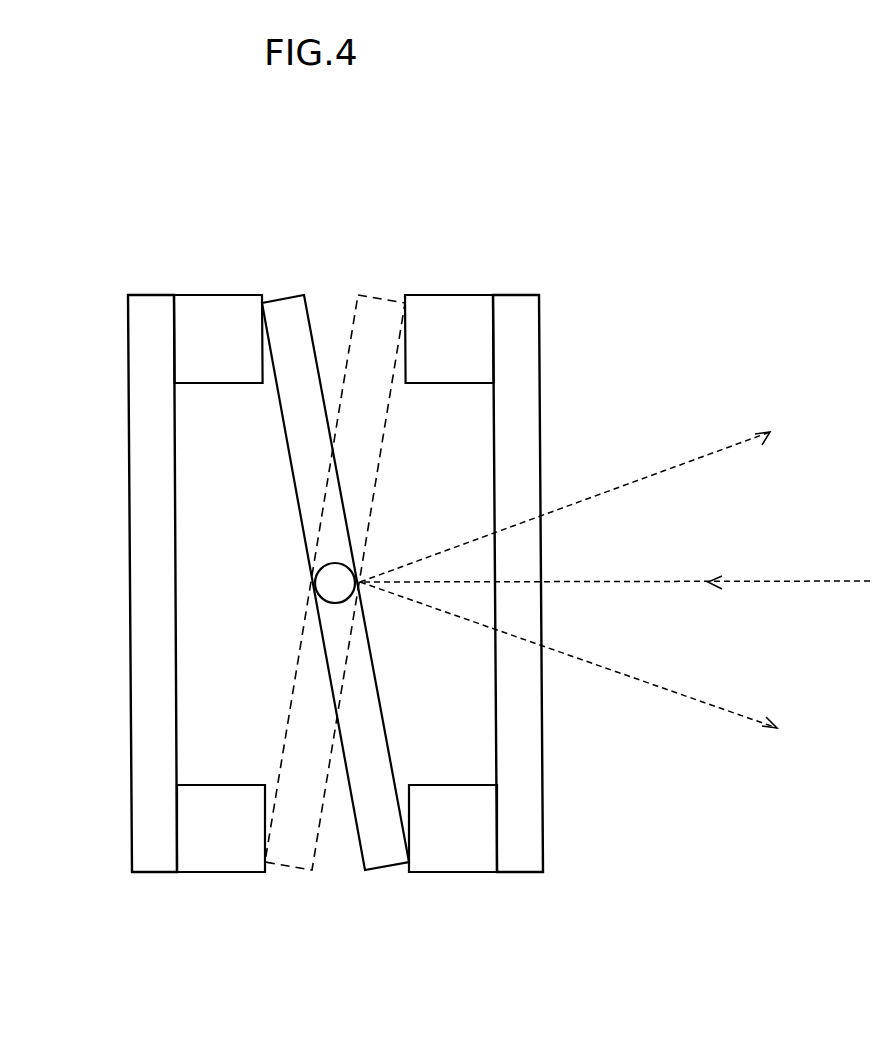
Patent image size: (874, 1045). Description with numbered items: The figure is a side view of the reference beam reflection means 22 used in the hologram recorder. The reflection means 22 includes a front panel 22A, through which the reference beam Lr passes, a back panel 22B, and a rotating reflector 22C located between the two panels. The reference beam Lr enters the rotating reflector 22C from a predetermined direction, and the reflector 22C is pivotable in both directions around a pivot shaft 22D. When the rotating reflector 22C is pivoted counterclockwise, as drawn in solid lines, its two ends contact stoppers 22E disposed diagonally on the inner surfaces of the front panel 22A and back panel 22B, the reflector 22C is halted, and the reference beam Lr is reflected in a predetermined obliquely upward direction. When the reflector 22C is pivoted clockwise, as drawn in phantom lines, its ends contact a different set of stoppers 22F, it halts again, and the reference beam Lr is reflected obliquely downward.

The reference beam reflection means 22 is at (521, 184).
The front panel 22A is at (525, 345).
The back panel 22B is at (143, 670).
The rotating reflector 22C is at (303, 318).
The pivot shaft 22D is at (332, 584).
The stoppers 22E is at (212, 308).
The stoppers 22F is at (445, 308).
The reference beam Lr is at (785, 581).